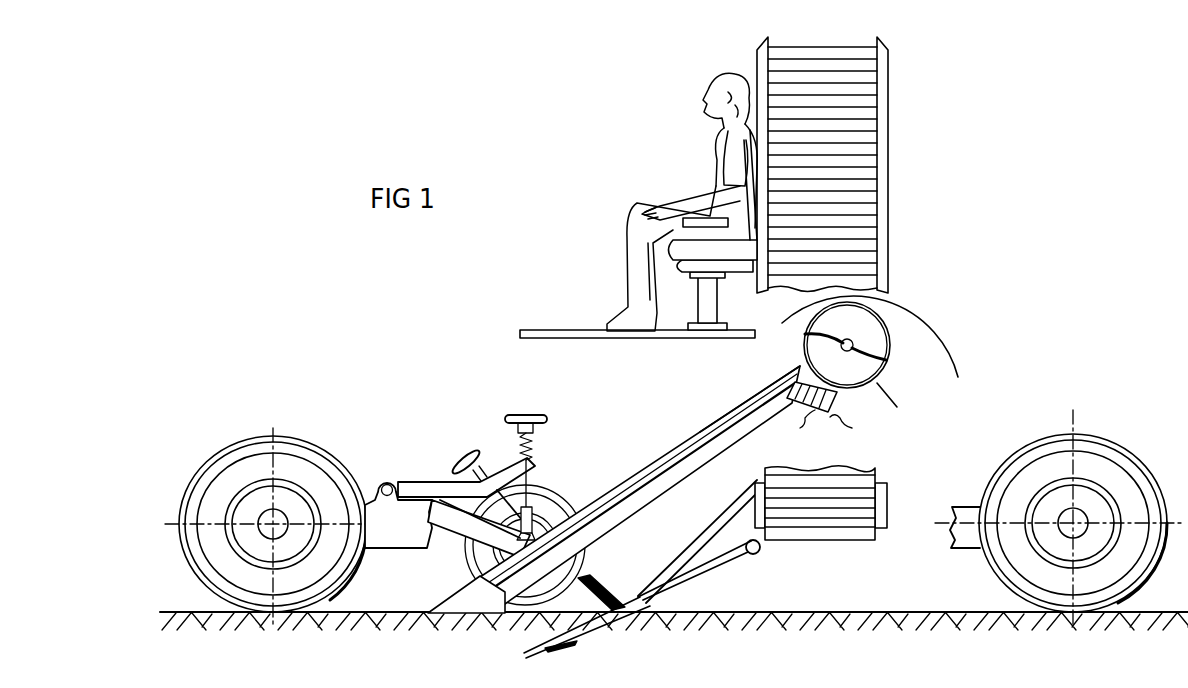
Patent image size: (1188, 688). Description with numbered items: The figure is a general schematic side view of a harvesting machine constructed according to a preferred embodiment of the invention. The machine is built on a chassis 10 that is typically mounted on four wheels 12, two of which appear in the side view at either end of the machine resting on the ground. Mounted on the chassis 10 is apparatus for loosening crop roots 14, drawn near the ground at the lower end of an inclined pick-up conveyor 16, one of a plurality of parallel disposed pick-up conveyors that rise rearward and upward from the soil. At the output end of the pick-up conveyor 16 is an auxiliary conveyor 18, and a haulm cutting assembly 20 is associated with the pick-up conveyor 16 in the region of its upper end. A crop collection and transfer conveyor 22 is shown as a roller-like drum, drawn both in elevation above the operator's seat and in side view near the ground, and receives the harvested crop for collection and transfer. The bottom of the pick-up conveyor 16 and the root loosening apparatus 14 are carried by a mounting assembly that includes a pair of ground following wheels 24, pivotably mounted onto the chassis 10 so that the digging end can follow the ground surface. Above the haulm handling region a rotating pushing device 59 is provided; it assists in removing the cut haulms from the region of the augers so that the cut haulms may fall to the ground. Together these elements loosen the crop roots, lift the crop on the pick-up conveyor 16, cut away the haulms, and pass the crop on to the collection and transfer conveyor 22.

The chassis 10 is at (383, 505).
The wheels 12 is at (237, 483).
The apparatus for loosening crop roots 14 is at (592, 640).
The pick-up conveyor 16 is at (657, 460).
The auxiliary conveyor 18 is at (776, 382).
The haulm cutting assembly 20 is at (808, 412).
The crop collection and transfer conveyor 22 is at (897, 168).
The ground following wheels 24 is at (547, 504).
The rotating pushing device 59 is at (883, 352).